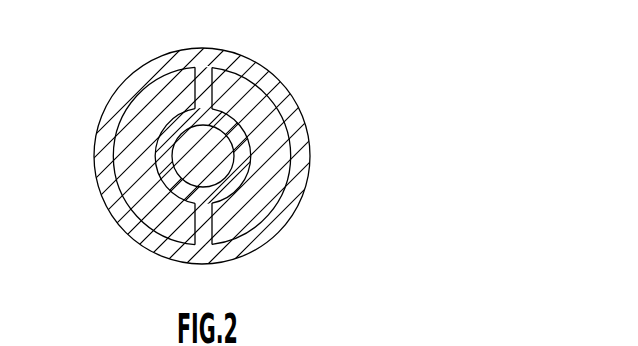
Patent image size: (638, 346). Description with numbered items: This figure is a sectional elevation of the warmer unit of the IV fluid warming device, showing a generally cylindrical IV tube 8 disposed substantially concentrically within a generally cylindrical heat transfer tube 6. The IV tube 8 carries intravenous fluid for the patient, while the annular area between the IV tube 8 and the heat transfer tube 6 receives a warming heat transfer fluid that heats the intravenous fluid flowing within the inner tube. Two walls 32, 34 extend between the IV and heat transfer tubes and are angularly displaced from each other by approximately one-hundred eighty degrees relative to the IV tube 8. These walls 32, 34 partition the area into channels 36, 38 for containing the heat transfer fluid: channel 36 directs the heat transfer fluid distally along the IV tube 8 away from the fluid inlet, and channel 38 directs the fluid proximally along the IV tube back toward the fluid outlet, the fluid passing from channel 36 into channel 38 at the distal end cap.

The heat transfer tube 6 is at (307, 127).
The IV tube 8 is at (204, 157).
The wall 32 is at (213, 70).
The wall 34 is at (212, 225).
The channel 36 is at (258, 115).
The channel 38 is at (135, 165).